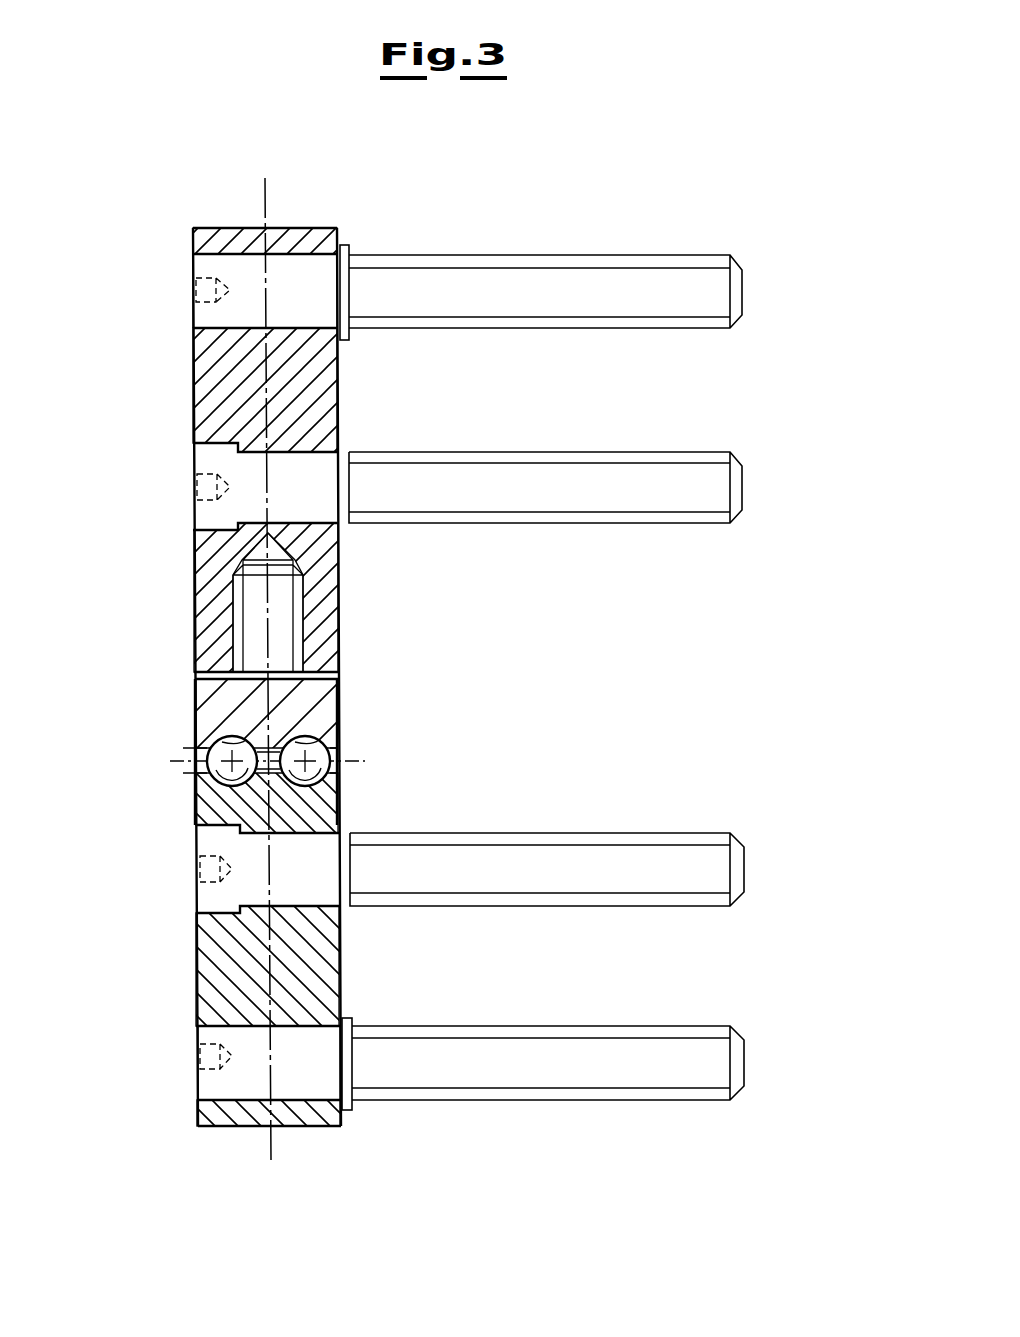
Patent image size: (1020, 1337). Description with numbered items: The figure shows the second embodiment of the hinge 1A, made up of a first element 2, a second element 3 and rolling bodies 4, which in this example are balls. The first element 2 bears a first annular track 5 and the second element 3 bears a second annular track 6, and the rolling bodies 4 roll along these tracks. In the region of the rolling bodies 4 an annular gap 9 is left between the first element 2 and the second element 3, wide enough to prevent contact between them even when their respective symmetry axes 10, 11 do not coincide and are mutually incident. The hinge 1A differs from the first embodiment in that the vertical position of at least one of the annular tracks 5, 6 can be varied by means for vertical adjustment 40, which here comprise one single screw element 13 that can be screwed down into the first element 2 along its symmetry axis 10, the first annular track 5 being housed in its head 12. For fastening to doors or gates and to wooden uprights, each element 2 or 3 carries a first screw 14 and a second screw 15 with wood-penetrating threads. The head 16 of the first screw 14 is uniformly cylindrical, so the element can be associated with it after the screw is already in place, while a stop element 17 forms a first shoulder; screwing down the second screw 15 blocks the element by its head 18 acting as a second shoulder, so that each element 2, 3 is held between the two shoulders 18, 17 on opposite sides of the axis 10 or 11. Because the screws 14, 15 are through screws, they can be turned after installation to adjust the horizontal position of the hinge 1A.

The hinge 1A is at (726, 188).
The first element 2 is at (205, 384).
The second element 3 is at (207, 974).
The rolling bodies 4 is at (220, 748).
The first annular track 5 is at (236, 750).
The second annular track 6 is at (238, 773).
The annular gap 9 is at (338, 760).
The symmetry axis 10 is at (268, 208).
The symmetry axis 11 is at (268, 1143).
The head 12 is at (220, 703).
The screw element 13 is at (336, 702).
The first screw 14 is at (508, 292).
The second screw 15 is at (500, 482).
The head 16 is at (207, 266).
The stop element 17 is at (346, 292).
The head 18 is at (205, 459).
The means for vertical adjustment 40 is at (360, 661).